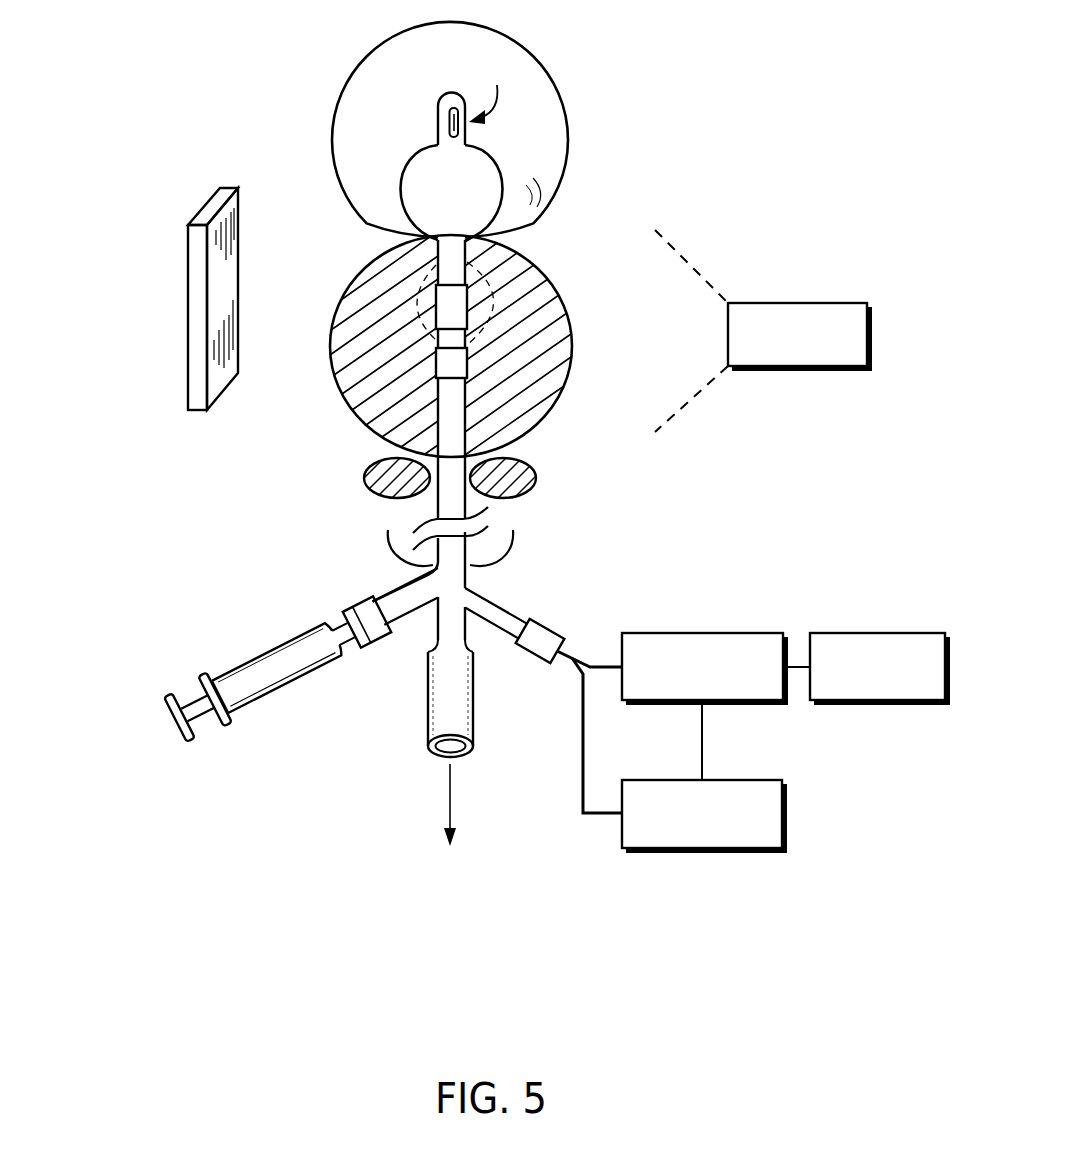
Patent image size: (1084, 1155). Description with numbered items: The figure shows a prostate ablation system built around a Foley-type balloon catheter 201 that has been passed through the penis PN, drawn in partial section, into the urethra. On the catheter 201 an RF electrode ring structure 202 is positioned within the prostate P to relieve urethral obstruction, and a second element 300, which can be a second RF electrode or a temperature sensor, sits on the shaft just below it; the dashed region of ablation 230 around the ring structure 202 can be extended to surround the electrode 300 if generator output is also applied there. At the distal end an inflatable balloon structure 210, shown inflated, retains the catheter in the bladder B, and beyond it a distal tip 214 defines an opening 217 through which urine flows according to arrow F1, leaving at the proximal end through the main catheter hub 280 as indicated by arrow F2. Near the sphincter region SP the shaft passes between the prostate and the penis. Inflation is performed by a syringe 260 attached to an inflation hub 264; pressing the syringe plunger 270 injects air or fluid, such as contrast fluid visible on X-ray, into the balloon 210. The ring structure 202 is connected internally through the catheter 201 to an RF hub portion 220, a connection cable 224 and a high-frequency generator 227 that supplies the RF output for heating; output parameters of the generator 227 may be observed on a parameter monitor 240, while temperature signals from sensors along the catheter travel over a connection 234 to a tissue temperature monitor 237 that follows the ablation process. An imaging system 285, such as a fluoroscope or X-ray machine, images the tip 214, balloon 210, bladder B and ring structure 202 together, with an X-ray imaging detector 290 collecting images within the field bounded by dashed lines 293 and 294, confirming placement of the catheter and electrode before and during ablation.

The bladder B is at (385, 50).
The distal tip 214 is at (437, 105).
The opening 217 is at (463, 100).
The arrow F1 is at (497, 106).
The inflatable balloon structure 210 is at (493, 175).
The prostate P is at (562, 370).
The RF electrode ring structure 202 is at (470, 298).
The catheter 201 is at (438, 503).
The region of ablation 230 is at (470, 322).
The second element 300 is at (470, 365).
The sphincter SP is at (533, 468).
The penis PN is at (516, 540).
The inflation hub 264 is at (350, 607).
The syringe 260 is at (267, 645).
The syringe plunger 270 is at (178, 722).
The RF hub portion 220 is at (547, 628).
The connection cable 224 is at (585, 650).
The connection 234 is at (604, 818).
The high-frequency generator 227 is at (732, 633).
The parameter monitor 240 is at (865, 633).
The tissue temperature monitor 237 is at (687, 852).
The imaging system 285 is at (783, 303).
The dashed line 293 is at (685, 258).
The dashed line 294 is at (695, 392).
The main catheter hub 280 is at (428, 705).
The arrow F2 is at (452, 782).
The X-ray imaging detector 290 is at (190, 332).